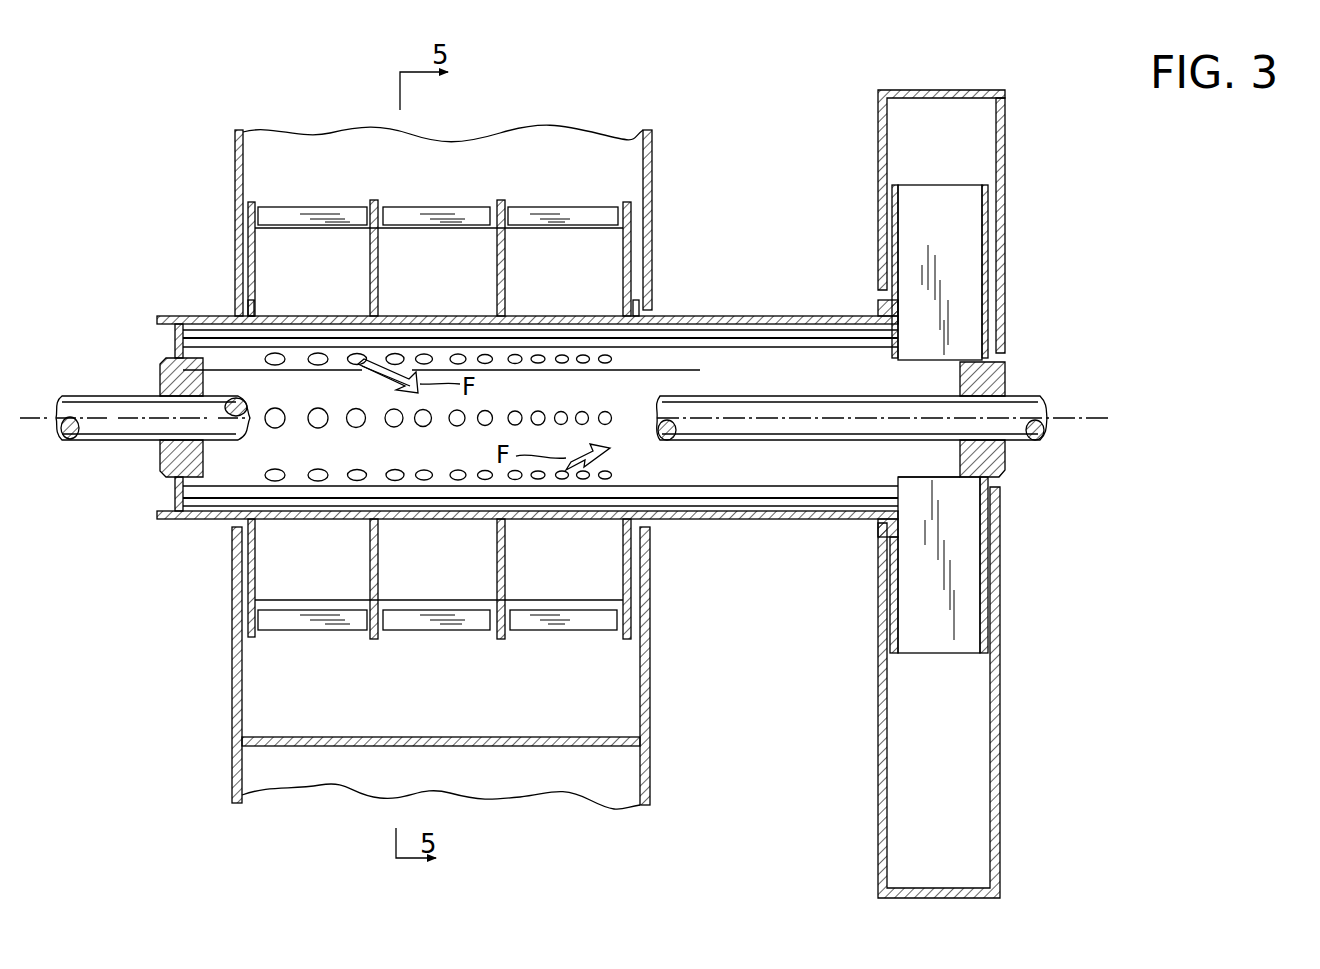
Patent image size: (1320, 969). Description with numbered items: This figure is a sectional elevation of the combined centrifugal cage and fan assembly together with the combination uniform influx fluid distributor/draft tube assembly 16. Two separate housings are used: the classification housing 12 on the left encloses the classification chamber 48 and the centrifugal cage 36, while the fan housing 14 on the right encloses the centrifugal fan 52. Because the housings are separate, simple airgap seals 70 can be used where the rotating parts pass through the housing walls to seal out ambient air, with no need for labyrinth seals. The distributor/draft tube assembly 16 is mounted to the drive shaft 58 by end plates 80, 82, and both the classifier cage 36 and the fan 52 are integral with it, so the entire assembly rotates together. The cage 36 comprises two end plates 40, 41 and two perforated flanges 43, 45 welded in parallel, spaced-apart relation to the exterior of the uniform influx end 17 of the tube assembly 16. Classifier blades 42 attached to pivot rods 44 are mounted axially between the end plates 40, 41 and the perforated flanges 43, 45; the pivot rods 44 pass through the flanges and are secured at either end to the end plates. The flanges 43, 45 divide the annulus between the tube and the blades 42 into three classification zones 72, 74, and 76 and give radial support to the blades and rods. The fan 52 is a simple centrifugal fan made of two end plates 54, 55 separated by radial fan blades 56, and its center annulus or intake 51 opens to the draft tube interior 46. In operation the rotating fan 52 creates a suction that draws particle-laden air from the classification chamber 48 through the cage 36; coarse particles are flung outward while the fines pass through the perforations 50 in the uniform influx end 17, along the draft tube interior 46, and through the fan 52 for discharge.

The classification housing 12 is at (232, 163).
The fan housing 14 is at (1008, 138).
The combination uniform influx fluid distributor/draft tube assembly 16 is at (766, 524).
The uniform influx end 17 is at (208, 522).
The centrifugal cage 36 is at (448, 645).
The end plate 40 is at (254, 204).
The end plate 41 is at (628, 205).
The classifier blades 42 is at (535, 207).
The perforated flange 43 is at (380, 272).
The pivot rods 44 is at (332, 232).
The perforated flange 45 is at (508, 280).
The draft tube interior 46 is at (752, 372).
The classification chamber 48 is at (606, 680).
The perforations 50 is at (424, 424).
The intake 51 is at (908, 470).
The centrifugal fan 52 is at (932, 656).
The end plate 54 is at (896, 184).
The end plate 55 is at (985, 185).
The radial fan blades 56 is at (950, 656).
The drive shaft 58 is at (76, 443).
The airgap seals 70 is at (235, 314).
The classification zone 72 is at (300, 565).
The classification zone 74 is at (452, 581).
The classification zone 76 is at (570, 581).
The end plate 80 is at (158, 376).
The end plate 82 is at (1008, 466).